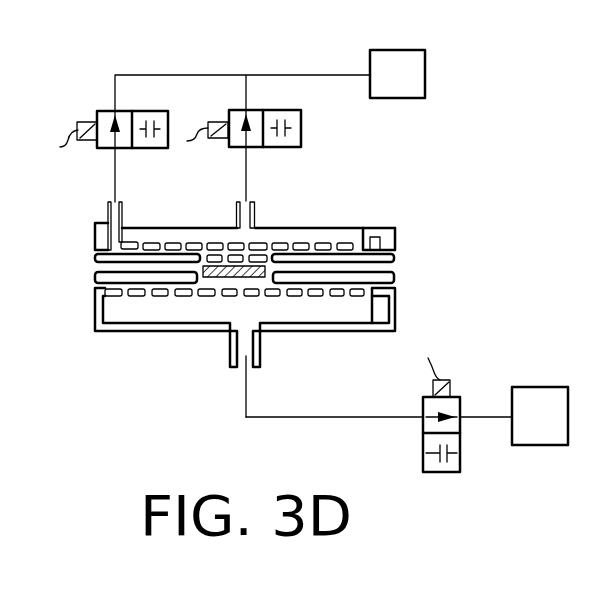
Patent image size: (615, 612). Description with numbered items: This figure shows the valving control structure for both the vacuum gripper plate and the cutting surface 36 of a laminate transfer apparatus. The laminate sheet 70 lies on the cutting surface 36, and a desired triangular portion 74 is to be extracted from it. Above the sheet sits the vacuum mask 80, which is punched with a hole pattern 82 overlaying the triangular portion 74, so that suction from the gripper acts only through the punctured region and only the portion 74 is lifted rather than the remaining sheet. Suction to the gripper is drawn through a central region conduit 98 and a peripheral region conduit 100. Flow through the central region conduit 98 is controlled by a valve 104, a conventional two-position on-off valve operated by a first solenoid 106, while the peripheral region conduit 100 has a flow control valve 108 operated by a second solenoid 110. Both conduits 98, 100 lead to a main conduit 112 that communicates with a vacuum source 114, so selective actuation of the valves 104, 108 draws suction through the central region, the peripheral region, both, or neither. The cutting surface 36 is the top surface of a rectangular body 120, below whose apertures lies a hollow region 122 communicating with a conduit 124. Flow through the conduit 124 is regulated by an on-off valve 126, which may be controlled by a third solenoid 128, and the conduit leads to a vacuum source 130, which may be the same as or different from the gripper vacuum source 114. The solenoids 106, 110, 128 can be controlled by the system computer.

The cutting surface 36 is at (360, 293).
The laminate sheet 70 is at (80, 279).
The triangular portion 74 is at (222, 278).
The vacuum mask 80 is at (82, 251).
The hole pattern 82 is at (246, 256).
The central region conduit 98 is at (248, 173).
The peripheral region conduit 100 is at (112, 173).
The valve 104 is at (318, 124).
The first solenoid 106 is at (218, 138).
The flow control valve 108 is at (143, 111).
The second solenoid 110 is at (85, 122).
The main conduit 112 is at (265, 75).
The vacuum source 114 is at (403, 63).
The rectangular body 120 is at (412, 307).
The hollow region 122 is at (358, 305).
The conduit 124 is at (232, 358).
The on-off valve 126 is at (472, 464).
The third solenoid 128 is at (453, 387).
The vacuum source 130 is at (543, 397).